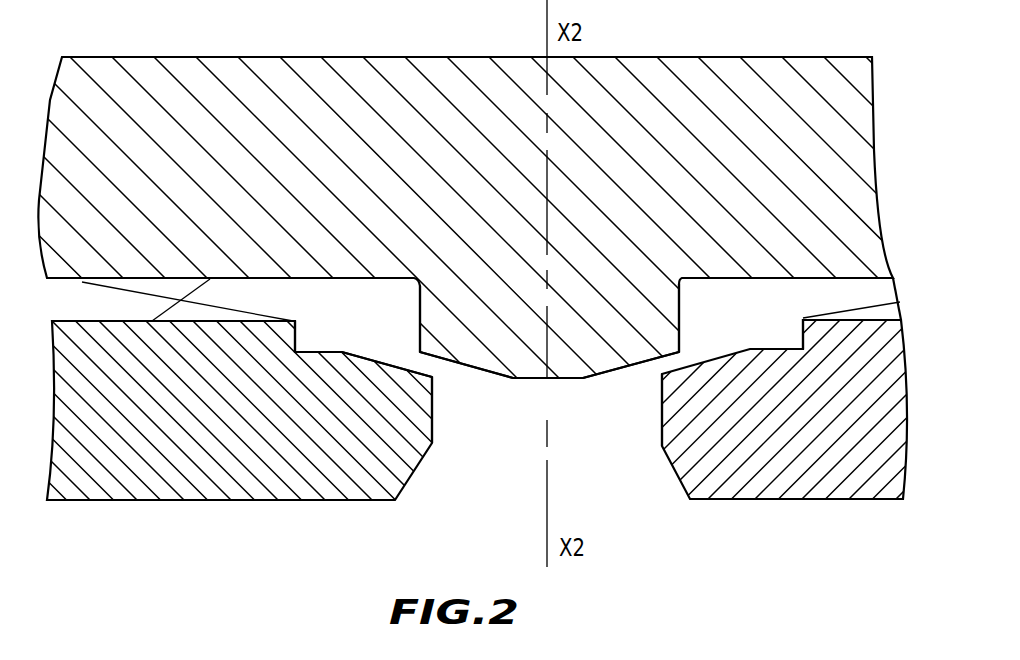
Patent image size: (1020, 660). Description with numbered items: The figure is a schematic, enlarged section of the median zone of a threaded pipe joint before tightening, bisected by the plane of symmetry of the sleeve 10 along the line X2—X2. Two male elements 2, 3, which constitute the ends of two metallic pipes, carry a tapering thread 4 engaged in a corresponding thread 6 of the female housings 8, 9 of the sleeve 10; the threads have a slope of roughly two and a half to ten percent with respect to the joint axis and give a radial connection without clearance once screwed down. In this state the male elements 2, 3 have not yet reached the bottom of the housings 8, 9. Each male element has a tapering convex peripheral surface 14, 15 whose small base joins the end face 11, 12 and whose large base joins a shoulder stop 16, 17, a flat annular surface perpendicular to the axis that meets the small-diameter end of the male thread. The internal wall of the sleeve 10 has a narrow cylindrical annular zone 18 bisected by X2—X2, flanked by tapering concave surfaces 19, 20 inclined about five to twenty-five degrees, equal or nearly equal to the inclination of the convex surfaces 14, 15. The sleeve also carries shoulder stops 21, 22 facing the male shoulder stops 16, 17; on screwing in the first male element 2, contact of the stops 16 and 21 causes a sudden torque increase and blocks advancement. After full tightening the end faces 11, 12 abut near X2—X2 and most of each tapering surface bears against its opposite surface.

The male element 2 is at (100, 501).
The male element 3 is at (857, 499).
The tapering thread 4 is at (80, 290).
The thread 6 is at (188, 290).
The female housing 8 is at (140, 277).
The female housing 9 is at (767, 278).
The sleeve 10 is at (760, 88).
The end face 11 is at (432, 422).
The end face 12 is at (662, 427).
The peripheral surface 14 is at (360, 352).
The peripheral surface 15 is at (728, 349).
The shoulder stop 16 is at (302, 328).
The shoulder stop 17 is at (797, 318).
The annular zone 18 is at (567, 380).
The surface 19 is at (495, 380).
The surface 20 is at (617, 373).
The shoulder stop 21 is at (420, 287).
The shoulder stop 22 is at (682, 283).